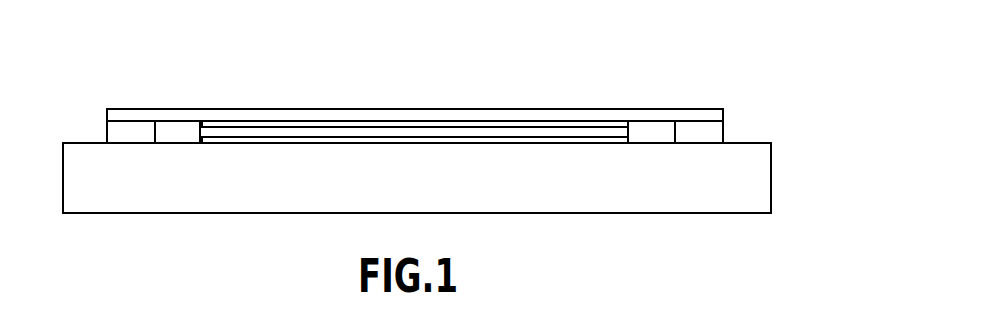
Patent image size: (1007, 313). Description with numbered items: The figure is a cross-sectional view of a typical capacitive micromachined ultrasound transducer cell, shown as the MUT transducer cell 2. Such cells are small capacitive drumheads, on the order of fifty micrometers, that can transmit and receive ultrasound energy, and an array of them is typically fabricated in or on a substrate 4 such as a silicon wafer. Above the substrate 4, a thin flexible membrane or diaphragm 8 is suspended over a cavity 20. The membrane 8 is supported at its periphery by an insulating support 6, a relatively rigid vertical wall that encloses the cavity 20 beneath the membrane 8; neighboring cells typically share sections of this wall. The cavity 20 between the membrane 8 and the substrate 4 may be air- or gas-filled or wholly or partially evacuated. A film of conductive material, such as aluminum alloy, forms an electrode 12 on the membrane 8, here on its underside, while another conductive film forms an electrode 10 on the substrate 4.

The MUT transducer cell 2 is at (645, 68).
The substrate 4 is at (772, 197).
The insulating support 6 is at (107, 128).
The membrane 8 is at (162, 118).
The electrode 10 is at (250, 138).
The electrode 12 is at (253, 123).
The cavity 20 is at (175, 132).